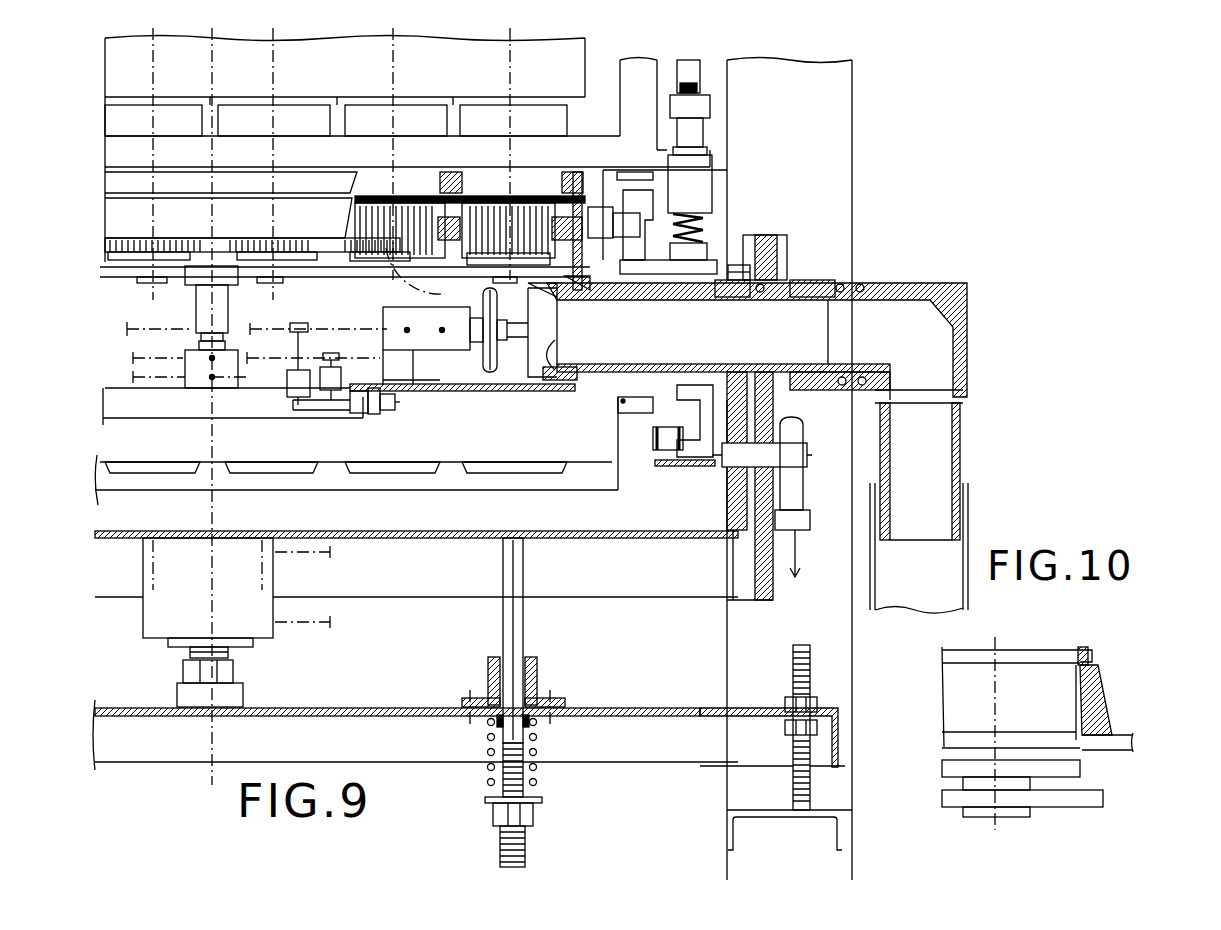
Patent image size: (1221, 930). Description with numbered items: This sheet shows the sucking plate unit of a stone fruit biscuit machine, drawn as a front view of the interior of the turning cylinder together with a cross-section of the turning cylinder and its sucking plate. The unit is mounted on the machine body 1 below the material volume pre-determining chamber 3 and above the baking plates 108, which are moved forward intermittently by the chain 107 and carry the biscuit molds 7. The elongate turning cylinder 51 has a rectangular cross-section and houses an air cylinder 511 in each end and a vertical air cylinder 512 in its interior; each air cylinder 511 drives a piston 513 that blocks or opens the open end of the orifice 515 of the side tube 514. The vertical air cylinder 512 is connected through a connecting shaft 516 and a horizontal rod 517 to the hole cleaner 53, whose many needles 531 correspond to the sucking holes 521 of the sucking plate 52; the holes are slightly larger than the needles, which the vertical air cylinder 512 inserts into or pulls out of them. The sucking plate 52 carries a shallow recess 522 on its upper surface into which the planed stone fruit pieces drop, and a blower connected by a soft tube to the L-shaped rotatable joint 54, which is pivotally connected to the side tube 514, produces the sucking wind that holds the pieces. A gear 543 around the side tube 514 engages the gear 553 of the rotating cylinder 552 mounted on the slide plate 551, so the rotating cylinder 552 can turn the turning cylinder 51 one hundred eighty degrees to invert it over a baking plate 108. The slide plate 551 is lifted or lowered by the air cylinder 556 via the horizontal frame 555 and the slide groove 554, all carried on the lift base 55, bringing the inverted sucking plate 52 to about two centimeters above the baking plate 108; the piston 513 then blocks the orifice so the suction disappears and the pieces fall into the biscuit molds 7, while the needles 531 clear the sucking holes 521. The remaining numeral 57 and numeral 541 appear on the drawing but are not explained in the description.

In FIG. 9, the machine body 1 is at (823, 155).
In FIG. 9, the material volume pre-determining chamber 3 is at (128, 68).
In FIG. 9, the biscuit molds 7 is at (510, 470).
In FIG. 9, the turning cylinder 51 is at (437, 393).
In FIG. 10, the turning cylinder 51 is at (1105, 742).
In FIG. 9, the sucking plate 52 is at (575, 240).
In FIG. 10, the sucking plate 52 is at (1090, 657).
In FIG. 9, the hole cleaner 53 is at (150, 268).
In FIG. 10, the hole cleaner 53 is at (1017, 817).
In FIG. 9, the rotatable joint 54 is at (968, 310).
In FIG. 9, the lift base 55 is at (575, 682).
In FIG. 9, the block 57 is at (118, 213).
In FIG. 9, the chain 107 is at (667, 443).
In FIG. 9, the baking plates 108 is at (578, 478).
In FIG. 9, the air cylinder 511 is at (457, 333).
In FIG. 9, the vertical air cylinder 512 is at (223, 372).
In FIG. 9, the piston 513 is at (497, 367).
In FIG. 9, the side tube 514 is at (617, 345).
In FIG. 9, the orifice 515 is at (543, 340).
In FIG. 9, the connecting shaft 516 is at (213, 310).
In FIG. 9, the horizontal rod 517 is at (330, 265).
In FIG. 10, the horizontal rod 517 is at (1083, 800).
In FIG. 10, the sucking holes 521 is at (1078, 648).
In FIG. 10, the shallow recess 522 is at (1020, 653).
In FIG. 10, the needles 531 is at (1097, 678).
In FIG. 9, the tube housing 541 is at (905, 600).
In FIG. 9, the gear 543 is at (740, 266).
In FIG. 9, the slide plate 551 is at (772, 568).
In FIG. 9, the rotating cylinder 552 is at (785, 433).
In FIG. 9, the gear 553 is at (733, 557).
In FIG. 9, the slide groove 554 is at (785, 250).
In FIG. 9, the horizontal frame 555 is at (397, 578).
In FIG. 9, the air cylinder 556 is at (247, 617).